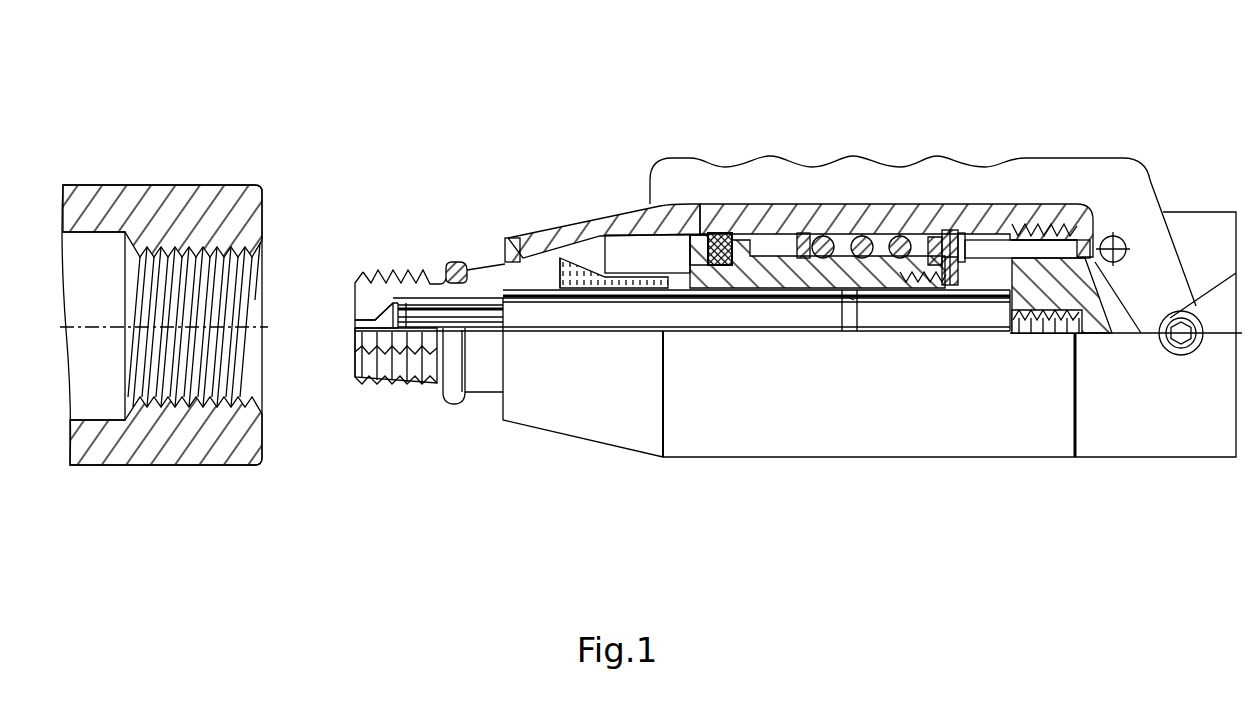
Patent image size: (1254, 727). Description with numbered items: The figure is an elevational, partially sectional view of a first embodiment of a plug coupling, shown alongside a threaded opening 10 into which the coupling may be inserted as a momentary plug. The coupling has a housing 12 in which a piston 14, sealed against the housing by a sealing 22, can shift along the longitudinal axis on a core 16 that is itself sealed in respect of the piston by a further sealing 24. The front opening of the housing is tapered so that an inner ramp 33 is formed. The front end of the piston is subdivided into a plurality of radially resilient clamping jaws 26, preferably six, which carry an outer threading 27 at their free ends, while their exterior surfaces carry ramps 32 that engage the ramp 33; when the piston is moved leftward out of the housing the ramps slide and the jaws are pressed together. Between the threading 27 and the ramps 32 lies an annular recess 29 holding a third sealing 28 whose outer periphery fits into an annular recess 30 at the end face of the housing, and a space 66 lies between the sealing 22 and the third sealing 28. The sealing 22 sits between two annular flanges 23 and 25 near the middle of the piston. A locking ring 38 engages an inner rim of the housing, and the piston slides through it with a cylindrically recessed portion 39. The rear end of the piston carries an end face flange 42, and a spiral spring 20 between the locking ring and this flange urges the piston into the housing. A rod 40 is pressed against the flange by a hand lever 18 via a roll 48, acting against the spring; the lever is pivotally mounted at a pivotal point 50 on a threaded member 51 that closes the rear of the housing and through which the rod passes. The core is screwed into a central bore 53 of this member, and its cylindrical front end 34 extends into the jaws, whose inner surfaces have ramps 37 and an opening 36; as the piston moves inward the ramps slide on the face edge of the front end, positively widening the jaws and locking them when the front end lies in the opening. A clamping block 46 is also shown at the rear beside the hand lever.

The threaded fitting 10 is at (157, 195).
The housing 12 is at (1013, 441).
The piston 14 is at (693, 273).
The core 16 is at (688, 333).
The hand lever 18 is at (1101, 173).
The spiral spring 20 is at (925, 240).
The sealing 22 is at (720, 240).
The annular flange 23 is at (680, 240).
The further sealing 24 is at (847, 300).
The annular flange 25 is at (779, 210).
The clamping jaws 26 is at (383, 294).
The outer threading 27 is at (405, 275).
The third sealing 28 is at (457, 262).
The annular recess 29 is at (440, 373).
The annular recess 30 is at (512, 255).
The ramps 32 is at (552, 253).
The inner ramp 33 is at (578, 243).
The front end 34 is at (483, 318).
The opening 36 is at (355, 339).
The ramps 37 is at (373, 319).
The locking ring 38 is at (805, 240).
The cylindrically recessed portion 39 is at (893, 240).
The rod 40 is at (980, 245).
The end face flange 42 is at (950, 265).
The clamping block 46 is at (1078, 285).
The roll 48 is at (1102, 239).
The pivotal point 50 is at (1186, 355).
The threaded member 51 is at (1128, 433).
The central bore 53 is at (1043, 336).
The space 66 is at (632, 257).